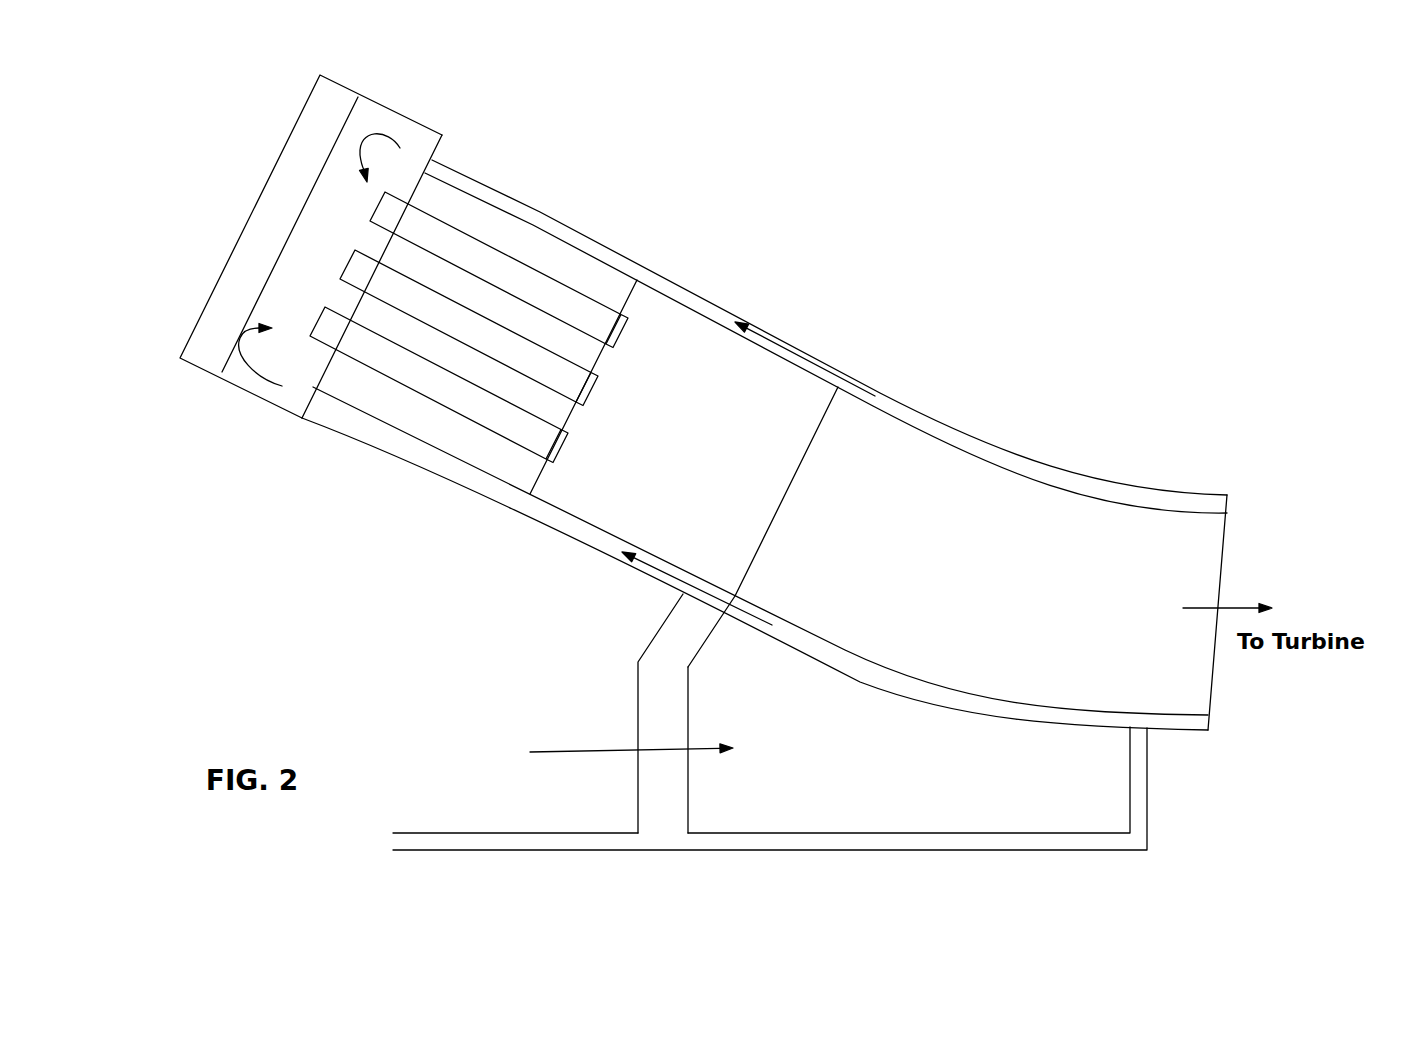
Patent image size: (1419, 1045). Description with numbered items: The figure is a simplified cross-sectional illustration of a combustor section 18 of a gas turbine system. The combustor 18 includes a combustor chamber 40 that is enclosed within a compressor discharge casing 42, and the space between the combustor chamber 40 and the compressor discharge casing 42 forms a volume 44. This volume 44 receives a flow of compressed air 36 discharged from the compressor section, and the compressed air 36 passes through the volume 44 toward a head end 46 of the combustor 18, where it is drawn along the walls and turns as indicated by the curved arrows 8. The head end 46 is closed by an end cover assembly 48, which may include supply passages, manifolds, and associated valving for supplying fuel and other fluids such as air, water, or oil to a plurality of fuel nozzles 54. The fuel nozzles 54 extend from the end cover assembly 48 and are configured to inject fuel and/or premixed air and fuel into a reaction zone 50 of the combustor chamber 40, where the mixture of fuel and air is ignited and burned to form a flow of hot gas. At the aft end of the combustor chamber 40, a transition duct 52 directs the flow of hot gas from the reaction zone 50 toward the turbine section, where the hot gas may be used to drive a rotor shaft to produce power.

The cooling air flow direction 8 is at (400, 148).
The combustor section 18 is at (890, 142).
The flow of compressed air 36 is at (803, 358).
The combustor chamber 40 is at (566, 526).
The compressor discharge casing 42 is at (477, 492).
The volume 44 is at (598, 238).
The head end 46 is at (414, 91).
The end cover assembly 48 is at (196, 383).
The reaction zone 50 is at (680, 355).
The transition duct 52 is at (1020, 496).
The fuel nozzles 54 is at (413, 355).